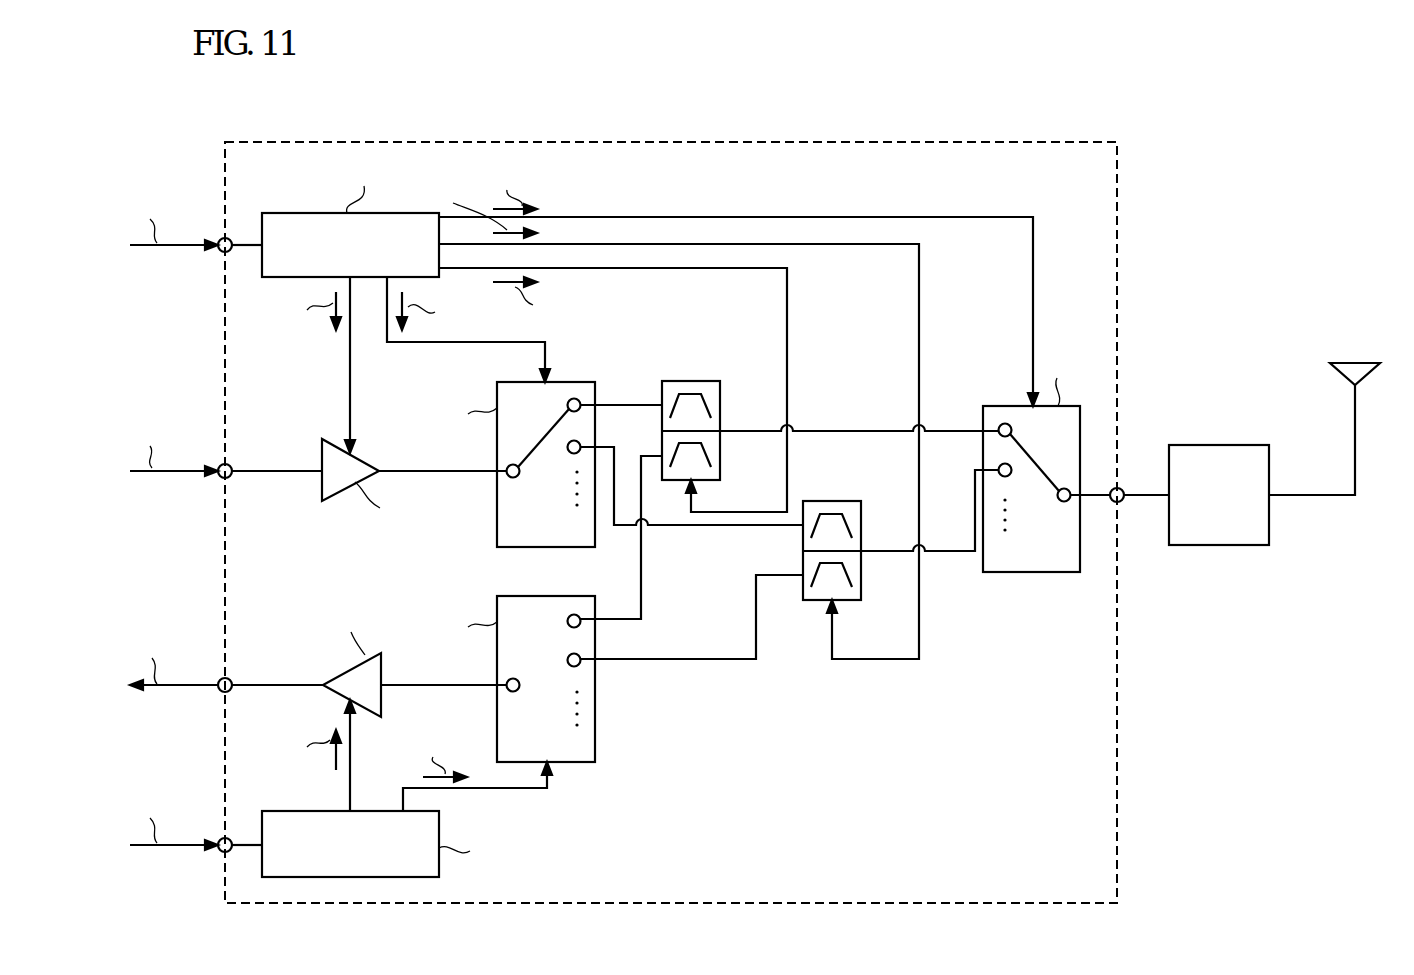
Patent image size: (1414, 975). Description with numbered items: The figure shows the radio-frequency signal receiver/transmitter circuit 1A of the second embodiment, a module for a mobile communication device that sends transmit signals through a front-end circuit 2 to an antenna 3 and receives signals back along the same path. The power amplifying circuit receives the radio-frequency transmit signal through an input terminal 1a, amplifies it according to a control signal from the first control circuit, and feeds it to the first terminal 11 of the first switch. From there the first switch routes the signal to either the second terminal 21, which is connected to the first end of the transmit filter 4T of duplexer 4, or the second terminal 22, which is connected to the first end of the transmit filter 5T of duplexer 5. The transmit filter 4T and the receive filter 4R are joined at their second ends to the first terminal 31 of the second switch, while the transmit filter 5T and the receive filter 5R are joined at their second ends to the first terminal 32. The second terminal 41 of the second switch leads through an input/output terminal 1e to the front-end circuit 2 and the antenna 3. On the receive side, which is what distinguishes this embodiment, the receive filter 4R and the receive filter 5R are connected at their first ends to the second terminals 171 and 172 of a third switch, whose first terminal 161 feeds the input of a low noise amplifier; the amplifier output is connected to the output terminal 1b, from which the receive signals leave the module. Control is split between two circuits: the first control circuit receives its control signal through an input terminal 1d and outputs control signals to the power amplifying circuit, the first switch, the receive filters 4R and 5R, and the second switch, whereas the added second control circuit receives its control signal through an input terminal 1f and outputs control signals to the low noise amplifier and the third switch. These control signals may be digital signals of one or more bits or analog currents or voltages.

The radio-frequency signal receiver/transmitter circuit 1A is at (1073, 143).
The input terminal 1d is at (225, 238).
The input terminal 1a is at (225, 464).
The output terminal 1b is at (225, 678).
The input terminal 1f is at (225, 838).
The input/output terminal 1e is at (1121, 502).
The front-end circuit 2 is at (1240, 445).
The antenna 3 is at (1364, 363).
The duplexer 4 is at (789, 468).
The transmit filter 4T is at (720, 400).
The receive filter 4R is at (720, 455).
The duplexer 5 is at (789, 550).
The transmit filter 5T is at (861, 520).
The receive filter 5R is at (861, 577).
The first terminal 11 is at (514, 478).
The second terminal 21 is at (566, 404).
The second terminal 22 is at (572, 454).
The first terminal 31 is at (1012, 430).
The first terminal 32 is at (1010, 477).
The second terminal 41 is at (1062, 502).
The first terminal 161 is at (514, 692).
The second terminal 171 is at (566, 620).
The second terminal 172 is at (566, 659).